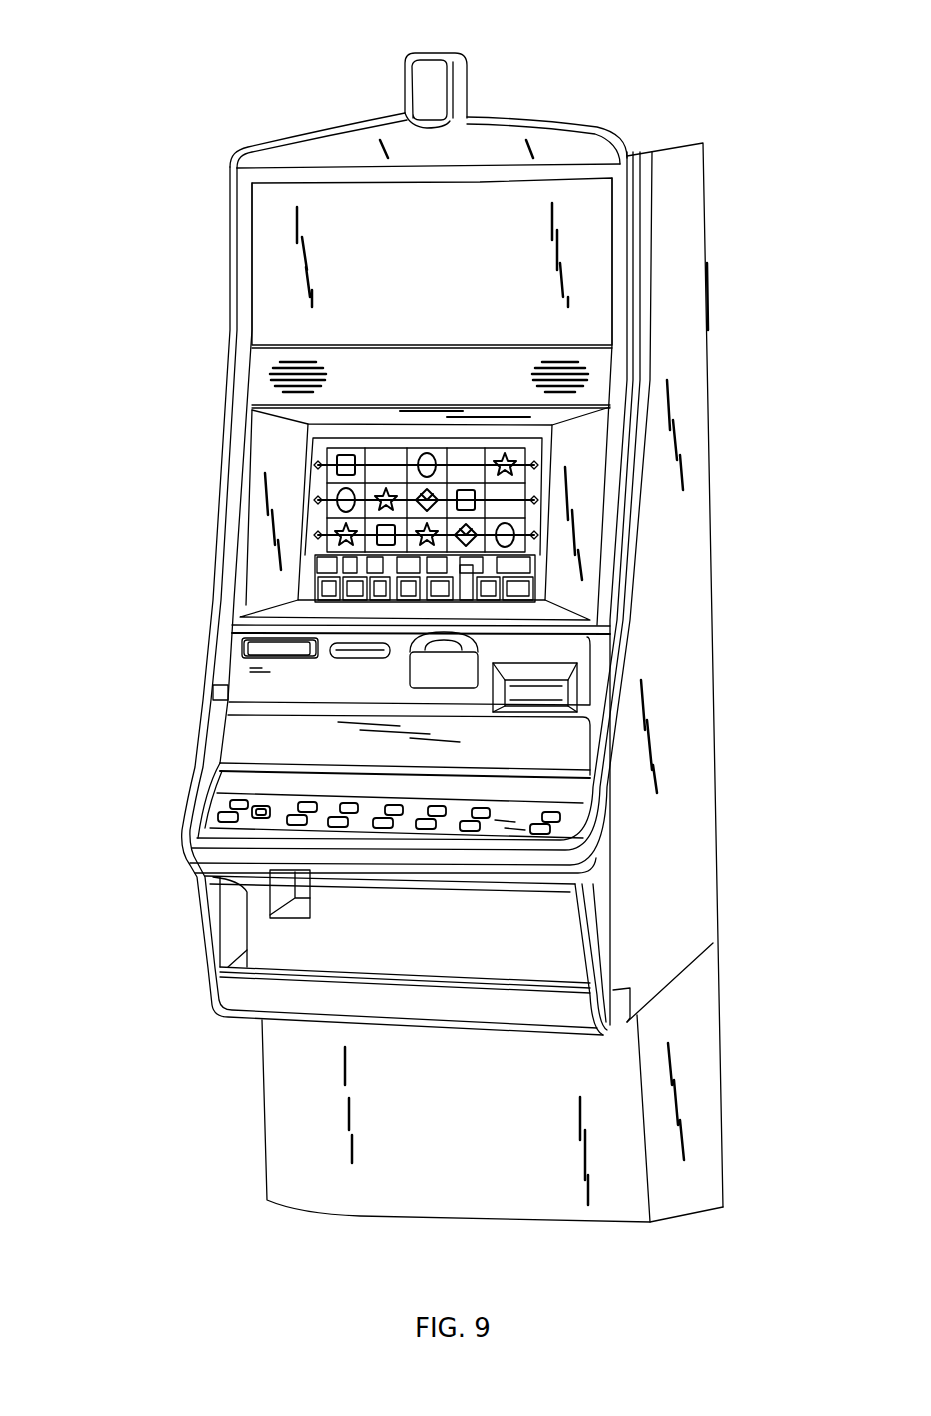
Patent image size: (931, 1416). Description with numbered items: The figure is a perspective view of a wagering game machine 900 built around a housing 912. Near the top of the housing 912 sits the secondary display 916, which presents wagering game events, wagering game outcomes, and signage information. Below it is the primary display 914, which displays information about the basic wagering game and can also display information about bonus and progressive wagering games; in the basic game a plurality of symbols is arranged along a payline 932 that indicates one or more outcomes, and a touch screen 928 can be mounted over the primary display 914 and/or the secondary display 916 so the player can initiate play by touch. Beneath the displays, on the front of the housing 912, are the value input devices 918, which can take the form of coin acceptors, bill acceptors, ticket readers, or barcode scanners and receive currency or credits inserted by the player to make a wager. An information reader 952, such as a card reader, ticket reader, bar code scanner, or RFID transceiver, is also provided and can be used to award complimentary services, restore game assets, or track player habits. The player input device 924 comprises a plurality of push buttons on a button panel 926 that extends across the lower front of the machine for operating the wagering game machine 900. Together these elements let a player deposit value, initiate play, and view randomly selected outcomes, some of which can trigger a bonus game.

The wagering game machine 900 is at (421, 612).
The housing 912 is at (697, 224).
The primary display 914 is at (305, 522).
The secondary display 916 is at (300, 258).
The value input devices 918 is at (480, 650).
The player input device 924 is at (565, 815).
The button panel 926 is at (282, 805).
The touch screen 928 is at (547, 587).
The payline 932 is at (437, 447).
The information reader 952 is at (330, 655).